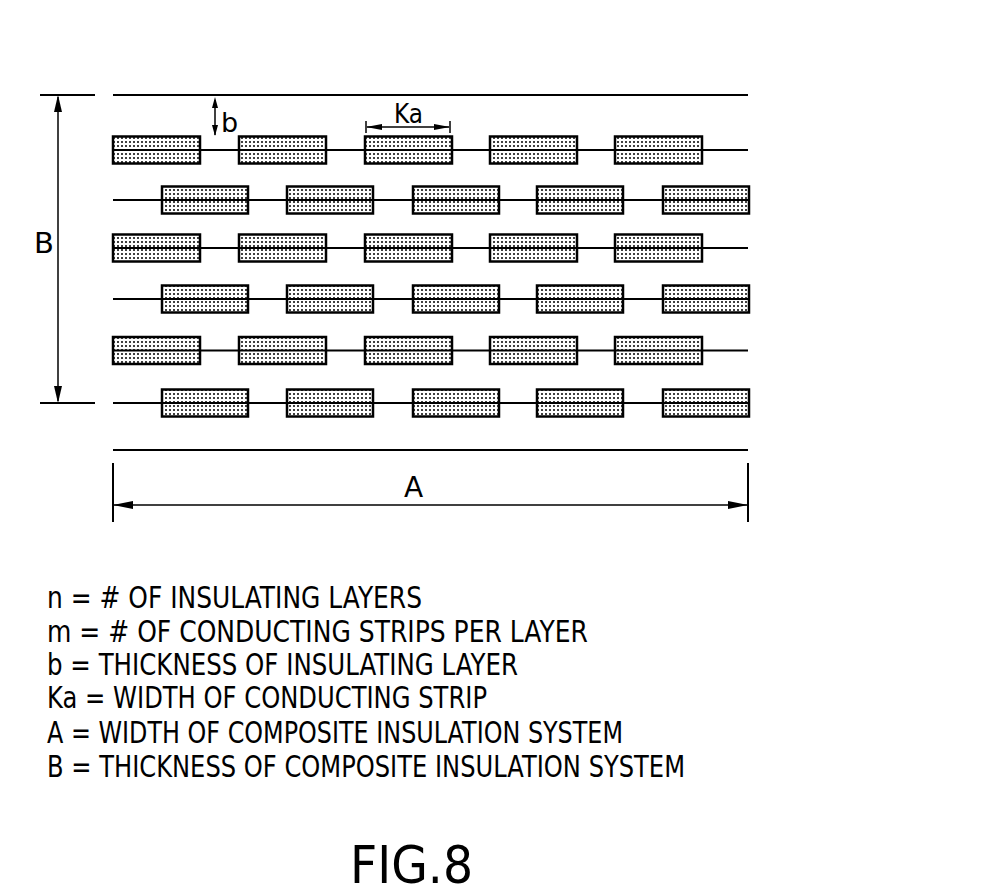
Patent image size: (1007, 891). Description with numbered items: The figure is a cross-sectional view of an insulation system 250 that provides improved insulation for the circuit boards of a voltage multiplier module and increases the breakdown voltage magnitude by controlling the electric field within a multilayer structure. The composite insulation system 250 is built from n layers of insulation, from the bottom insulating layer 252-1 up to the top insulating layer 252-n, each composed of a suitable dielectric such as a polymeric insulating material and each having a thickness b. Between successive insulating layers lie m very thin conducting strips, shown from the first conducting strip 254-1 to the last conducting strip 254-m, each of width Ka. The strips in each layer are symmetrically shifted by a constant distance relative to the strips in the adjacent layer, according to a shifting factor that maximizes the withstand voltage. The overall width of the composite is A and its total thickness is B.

The insulation system 250 is at (812, 51).
The insulation layer 252-n is at (746, 126).
The insulation layer 252-1 is at (746, 430).
The conducting strip 254-1 is at (147, 137).
The conducting strip 254-m is at (663, 137).